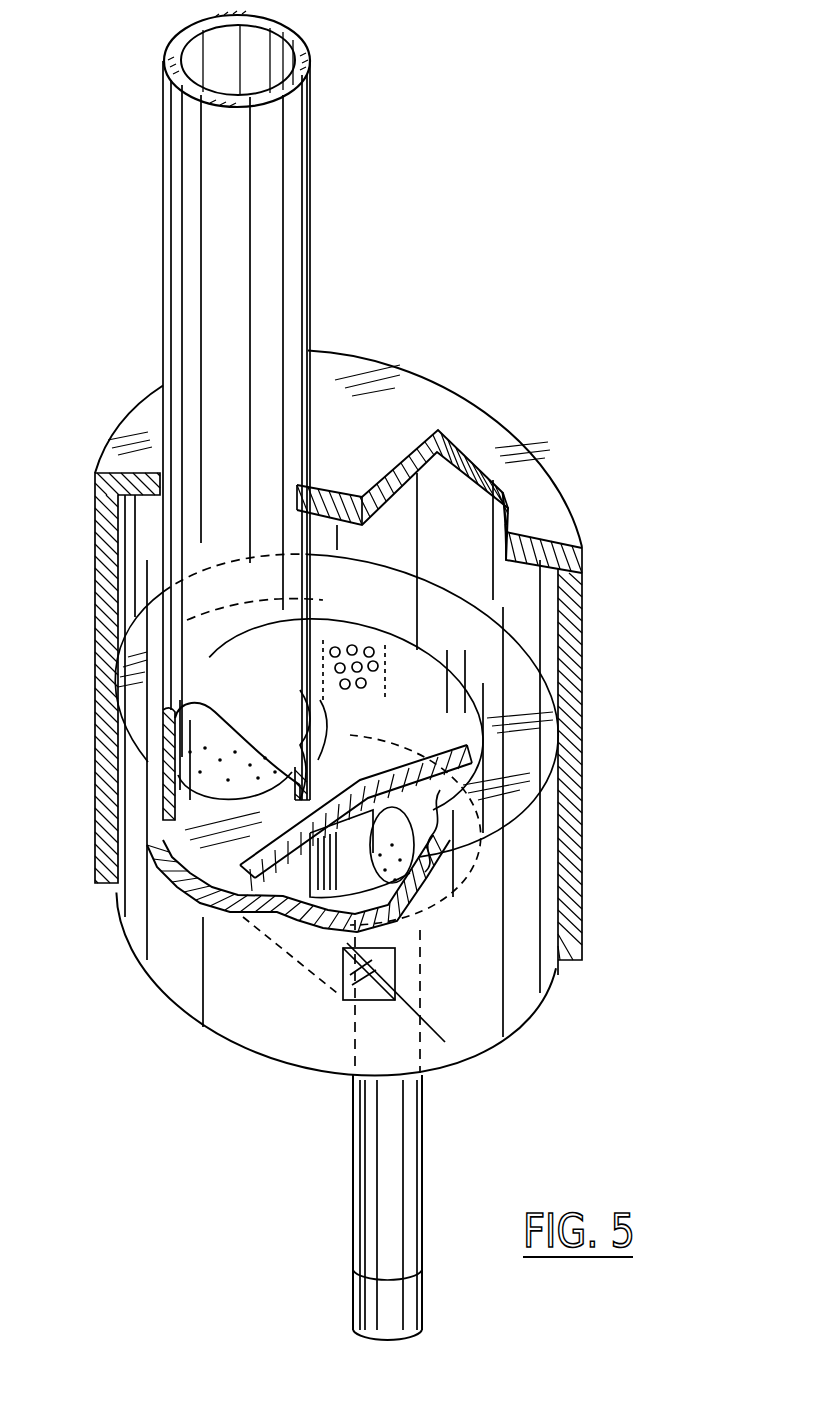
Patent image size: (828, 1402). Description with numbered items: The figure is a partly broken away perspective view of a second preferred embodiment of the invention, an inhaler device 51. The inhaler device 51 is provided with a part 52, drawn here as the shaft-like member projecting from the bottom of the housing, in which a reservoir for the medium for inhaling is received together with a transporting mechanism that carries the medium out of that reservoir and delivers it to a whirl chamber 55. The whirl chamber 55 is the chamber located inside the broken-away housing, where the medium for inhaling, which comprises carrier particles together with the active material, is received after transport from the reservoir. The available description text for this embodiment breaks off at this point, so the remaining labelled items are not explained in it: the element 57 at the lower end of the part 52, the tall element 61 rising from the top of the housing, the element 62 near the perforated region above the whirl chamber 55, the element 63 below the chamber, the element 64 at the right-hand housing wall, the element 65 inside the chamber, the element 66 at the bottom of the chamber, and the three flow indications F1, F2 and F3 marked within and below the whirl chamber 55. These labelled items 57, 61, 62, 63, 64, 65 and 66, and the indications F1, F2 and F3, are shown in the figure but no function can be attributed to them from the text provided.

The inhaler device 51 is at (512, 390).
The part 52 is at (340, 1178).
The whirl chamber 55 is at (338, 715).
The shaft end ring 57 is at (397, 1300).
The feed tube 61 is at (267, 246).
The sieve openings 62 is at (375, 630).
The outlet block 63 is at (343, 1000).
The housing wall 64 is at (583, 840).
The inclined deflector plate 65 is at (470, 718).
The cup-shaped bottom member 66 is at (290, 877).
The flow direction F1 is at (374, 735).
The flow direction F2 is at (380, 955).
The flow direction F3 is at (217, 785).